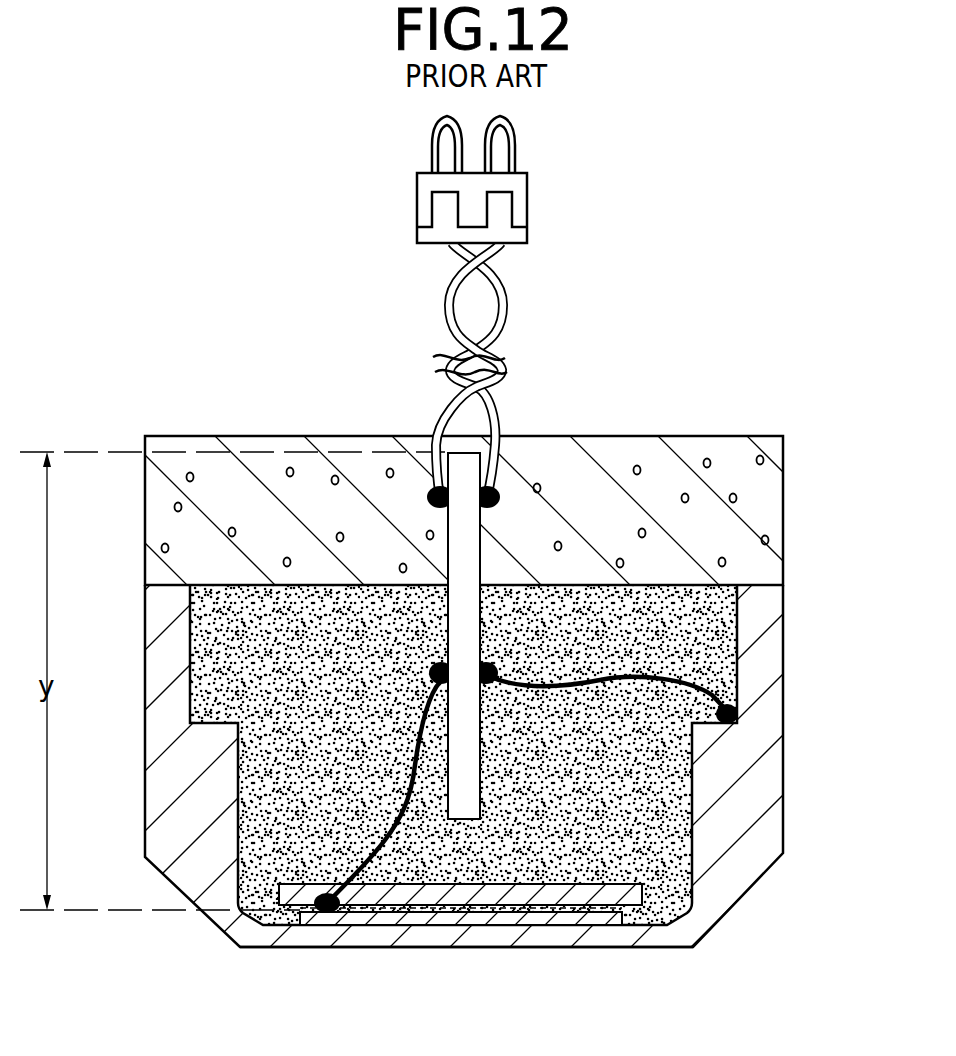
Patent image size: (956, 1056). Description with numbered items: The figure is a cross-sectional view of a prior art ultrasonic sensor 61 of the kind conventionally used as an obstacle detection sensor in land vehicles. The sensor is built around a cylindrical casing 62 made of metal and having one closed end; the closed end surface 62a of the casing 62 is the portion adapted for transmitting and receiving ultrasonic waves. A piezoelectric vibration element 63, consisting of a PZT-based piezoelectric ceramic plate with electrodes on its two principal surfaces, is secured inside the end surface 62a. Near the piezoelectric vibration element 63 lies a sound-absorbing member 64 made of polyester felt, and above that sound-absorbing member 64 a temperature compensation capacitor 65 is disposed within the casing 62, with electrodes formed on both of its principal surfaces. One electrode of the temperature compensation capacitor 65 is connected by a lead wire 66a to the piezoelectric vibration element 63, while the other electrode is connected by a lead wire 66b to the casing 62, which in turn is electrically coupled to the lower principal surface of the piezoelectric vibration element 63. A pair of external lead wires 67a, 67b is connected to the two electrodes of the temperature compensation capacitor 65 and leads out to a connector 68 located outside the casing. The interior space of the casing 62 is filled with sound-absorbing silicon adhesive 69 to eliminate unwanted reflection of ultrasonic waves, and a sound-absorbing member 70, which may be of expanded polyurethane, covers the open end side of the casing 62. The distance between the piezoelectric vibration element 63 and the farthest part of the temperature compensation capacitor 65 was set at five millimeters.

The ultrasonic sensor 61 is at (118, 310).
The casing 62 is at (145, 772).
The closed end surface 62a is at (533, 947).
The piezoelectric vibration element 63 is at (419, 915).
The sound-absorbing member 64 is at (633, 898).
The temperature compensation capacitor 65 is at (482, 784).
The lead wire 66a is at (438, 687).
The lead wire 66b is at (708, 692).
The external lead wire 67a is at (450, 306).
The external lead wire 67b is at (508, 305).
The connector 68 is at (528, 188).
The sound-absorbing silicon adhesive 69 is at (720, 613).
The sound-absorbing member 70 is at (737, 436).